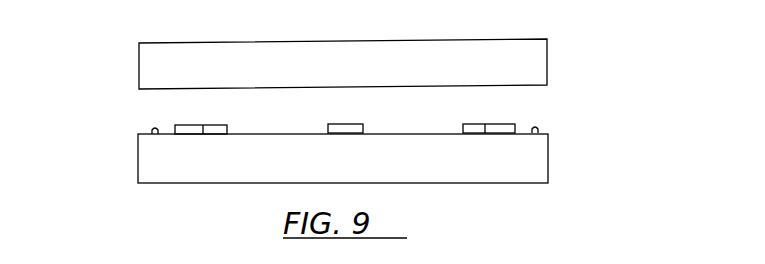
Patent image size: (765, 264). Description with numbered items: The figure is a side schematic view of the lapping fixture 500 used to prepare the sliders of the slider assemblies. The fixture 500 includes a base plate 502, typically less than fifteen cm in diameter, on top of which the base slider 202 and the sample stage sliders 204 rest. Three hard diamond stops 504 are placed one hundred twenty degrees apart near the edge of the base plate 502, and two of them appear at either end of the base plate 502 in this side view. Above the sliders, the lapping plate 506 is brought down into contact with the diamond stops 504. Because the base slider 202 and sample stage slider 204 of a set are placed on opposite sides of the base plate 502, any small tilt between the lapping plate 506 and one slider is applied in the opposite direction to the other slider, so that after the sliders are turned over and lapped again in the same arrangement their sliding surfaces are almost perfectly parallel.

The lapping fixture 500 is at (618, 199).
The base plate 502 is at (548, 165).
The diamond stop 504 is at (148, 129).
The lapping plate 506 is at (547, 58).
The sample stage slider 204 is at (202, 109).
The base slider 202 is at (357, 124).